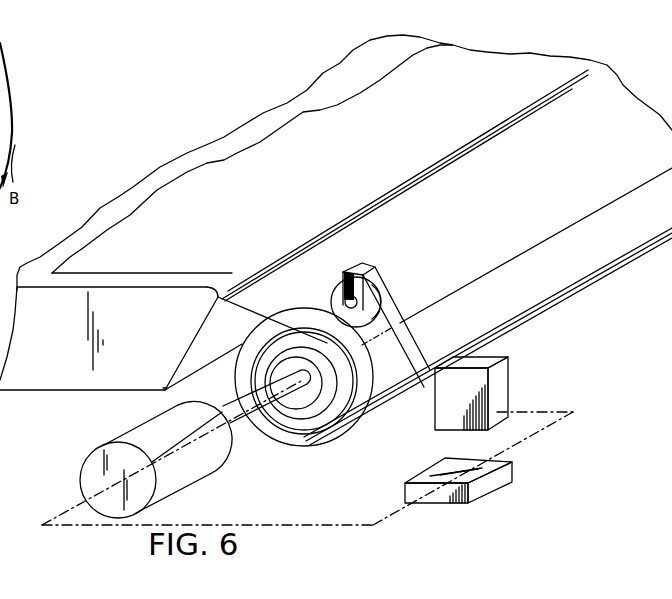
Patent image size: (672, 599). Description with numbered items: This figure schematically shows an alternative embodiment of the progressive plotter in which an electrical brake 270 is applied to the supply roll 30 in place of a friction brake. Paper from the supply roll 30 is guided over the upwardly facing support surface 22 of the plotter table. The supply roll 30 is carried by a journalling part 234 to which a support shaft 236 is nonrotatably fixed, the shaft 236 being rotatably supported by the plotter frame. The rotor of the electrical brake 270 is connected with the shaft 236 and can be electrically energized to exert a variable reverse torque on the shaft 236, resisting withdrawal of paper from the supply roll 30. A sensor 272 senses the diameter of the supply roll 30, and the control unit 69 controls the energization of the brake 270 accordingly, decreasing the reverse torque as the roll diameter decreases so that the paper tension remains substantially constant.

The support surface 22 is at (72, 280).
The supply roll 30 is at (590, 275).
The journalling part 234 is at (317, 389).
The support shaft 236 is at (237, 421).
The electrical brake 270 is at (133, 437).
The sensor 272 is at (502, 385).
The control unit 69 is at (485, 478).